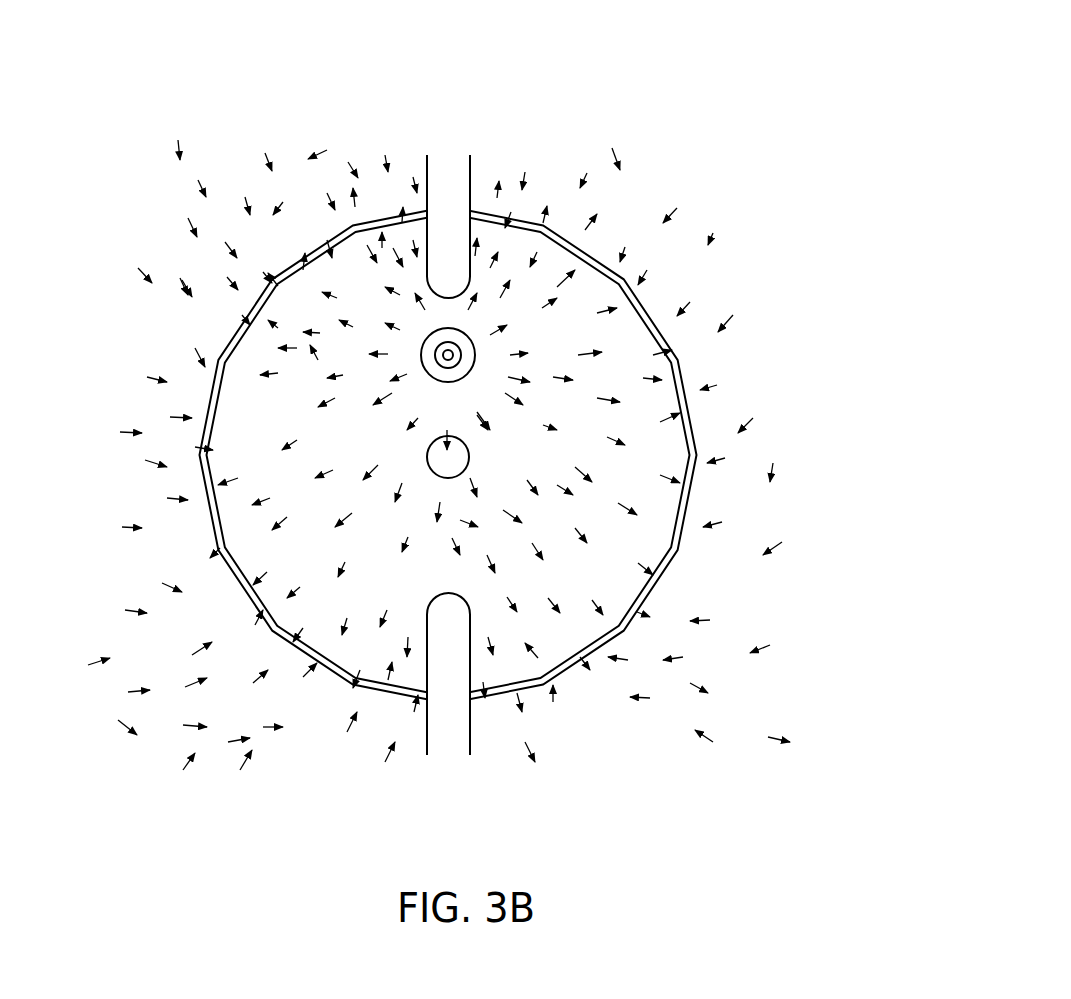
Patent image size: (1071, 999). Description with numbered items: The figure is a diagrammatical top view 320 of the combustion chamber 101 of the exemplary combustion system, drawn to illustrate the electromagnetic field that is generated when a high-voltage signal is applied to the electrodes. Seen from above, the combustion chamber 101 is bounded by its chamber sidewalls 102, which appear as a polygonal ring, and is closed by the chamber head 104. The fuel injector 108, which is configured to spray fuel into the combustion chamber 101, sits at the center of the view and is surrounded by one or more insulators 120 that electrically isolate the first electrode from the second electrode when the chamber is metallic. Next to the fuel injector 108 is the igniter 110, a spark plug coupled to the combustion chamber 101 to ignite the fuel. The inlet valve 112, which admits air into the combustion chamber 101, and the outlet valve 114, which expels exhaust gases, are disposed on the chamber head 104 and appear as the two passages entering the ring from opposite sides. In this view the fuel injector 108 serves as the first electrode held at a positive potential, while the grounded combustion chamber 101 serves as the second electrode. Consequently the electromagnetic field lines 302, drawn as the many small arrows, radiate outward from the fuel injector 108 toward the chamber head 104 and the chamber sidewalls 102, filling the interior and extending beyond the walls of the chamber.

The combustion chamber 101 is at (668, 573).
The chamber sidewalls 102 is at (685, 379).
The chamber head 104 is at (240, 357).
The fuel injector 108 is at (441, 362).
The igniter 110 is at (466, 468).
The inlet valve 112 is at (471, 742).
The outlet valve 114 is at (471, 172).
The insulators 120 is at (468, 334).
The electromagnetic field lines 302 is at (716, 232).
The top view 320 is at (699, 66).